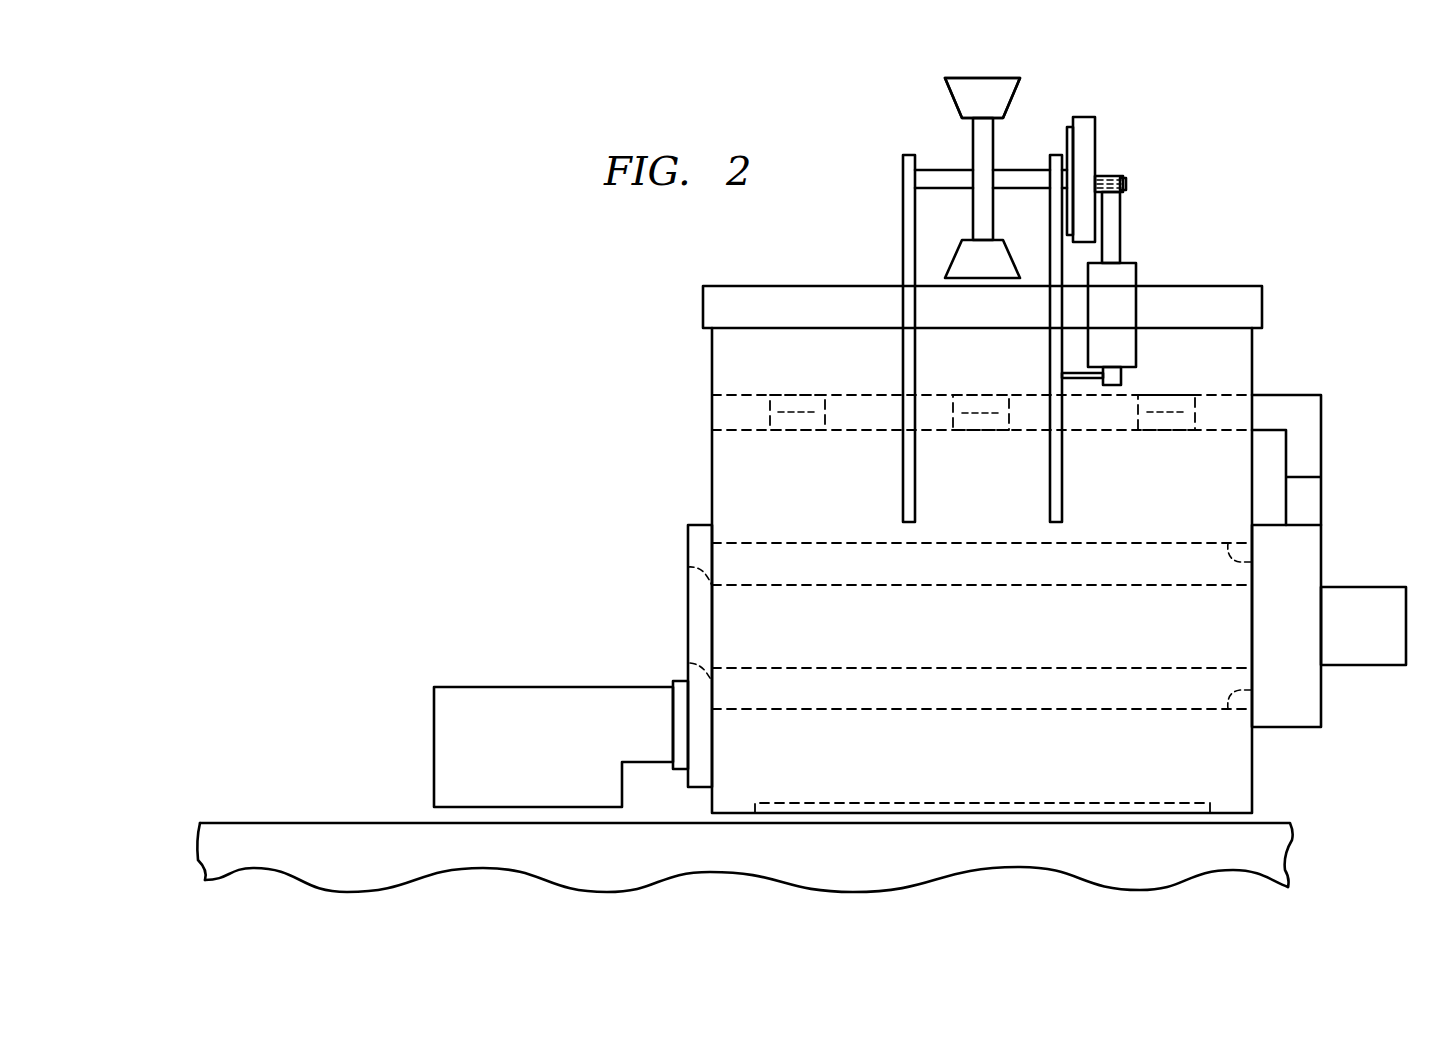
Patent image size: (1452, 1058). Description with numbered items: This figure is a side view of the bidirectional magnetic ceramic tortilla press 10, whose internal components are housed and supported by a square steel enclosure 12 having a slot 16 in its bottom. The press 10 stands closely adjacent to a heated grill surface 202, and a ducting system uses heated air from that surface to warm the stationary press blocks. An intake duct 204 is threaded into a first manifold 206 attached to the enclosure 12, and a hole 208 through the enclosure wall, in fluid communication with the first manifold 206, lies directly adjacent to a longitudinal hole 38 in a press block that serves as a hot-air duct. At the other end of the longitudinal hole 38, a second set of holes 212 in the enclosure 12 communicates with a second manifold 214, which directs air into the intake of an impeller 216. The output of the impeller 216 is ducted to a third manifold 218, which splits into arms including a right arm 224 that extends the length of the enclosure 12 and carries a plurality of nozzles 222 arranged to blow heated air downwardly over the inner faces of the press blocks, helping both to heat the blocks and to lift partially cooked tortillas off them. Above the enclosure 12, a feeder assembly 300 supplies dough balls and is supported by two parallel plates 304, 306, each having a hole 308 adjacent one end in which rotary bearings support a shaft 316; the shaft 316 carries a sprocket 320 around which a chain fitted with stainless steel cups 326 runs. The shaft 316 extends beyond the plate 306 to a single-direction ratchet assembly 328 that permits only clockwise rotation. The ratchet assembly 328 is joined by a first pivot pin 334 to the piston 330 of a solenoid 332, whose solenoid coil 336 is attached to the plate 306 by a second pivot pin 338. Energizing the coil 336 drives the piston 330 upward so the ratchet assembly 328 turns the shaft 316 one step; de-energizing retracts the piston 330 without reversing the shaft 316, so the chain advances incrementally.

The tortilla press 10 is at (600, 300).
The enclosure 12 is at (711, 358).
The slot 16 is at (943, 805).
The longitudinal hole 38 is at (1117, 542).
The heated grill surface 202 is at (287, 827).
The intake duct 204 is at (492, 686).
The first manifold 206 is at (702, 525).
The hole 208 is at (687, 570).
The second set of holes 212 is at (1228, 543).
The second manifold 214 is at (1320, 550).
The impeller 216 is at (1363, 666).
The third manifold 218 is at (1320, 498).
The nozzles 222 is at (802, 412).
The right arm 224 is at (1320, 435).
The feeder assembly 300 is at (1244, 146).
The plate 304 is at (902, 243).
The plate 306 is at (1049, 462).
The hole 308 is at (902, 177).
The shaft 316 is at (1018, 169).
The sprocket 320 is at (970, 143).
The cup 326 is at (982, 78).
The single-direction ratchet assembly 328 is at (1095, 140).
The piston 330 is at (1120, 228).
The solenoid 332 is at (1238, 250).
The first pivot pin 334 is at (1125, 180).
The solenoid coil 336 is at (1137, 276).
The second pivot pin 338 is at (1080, 383).